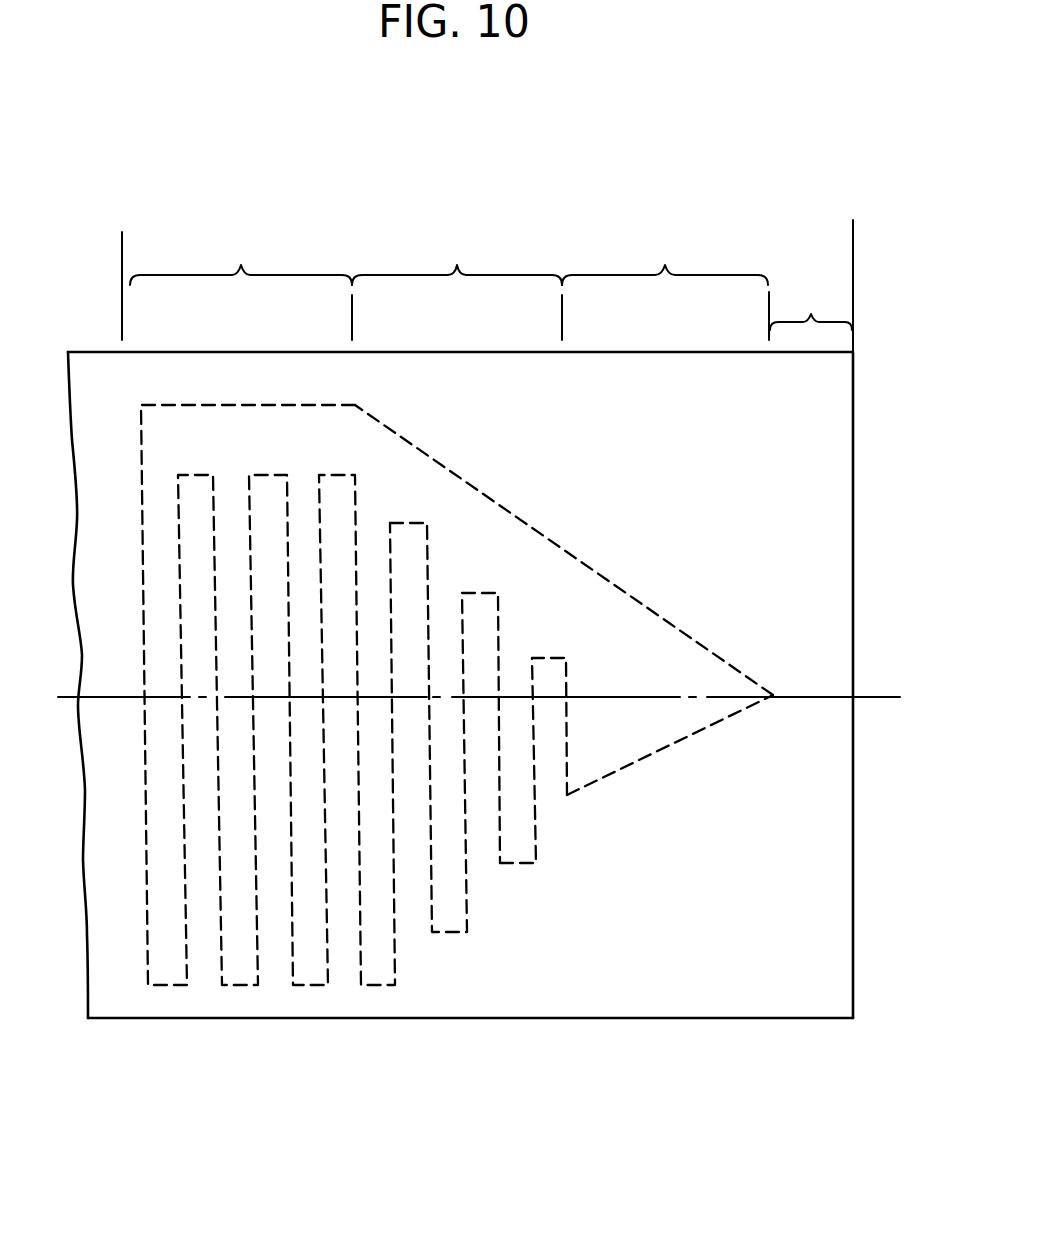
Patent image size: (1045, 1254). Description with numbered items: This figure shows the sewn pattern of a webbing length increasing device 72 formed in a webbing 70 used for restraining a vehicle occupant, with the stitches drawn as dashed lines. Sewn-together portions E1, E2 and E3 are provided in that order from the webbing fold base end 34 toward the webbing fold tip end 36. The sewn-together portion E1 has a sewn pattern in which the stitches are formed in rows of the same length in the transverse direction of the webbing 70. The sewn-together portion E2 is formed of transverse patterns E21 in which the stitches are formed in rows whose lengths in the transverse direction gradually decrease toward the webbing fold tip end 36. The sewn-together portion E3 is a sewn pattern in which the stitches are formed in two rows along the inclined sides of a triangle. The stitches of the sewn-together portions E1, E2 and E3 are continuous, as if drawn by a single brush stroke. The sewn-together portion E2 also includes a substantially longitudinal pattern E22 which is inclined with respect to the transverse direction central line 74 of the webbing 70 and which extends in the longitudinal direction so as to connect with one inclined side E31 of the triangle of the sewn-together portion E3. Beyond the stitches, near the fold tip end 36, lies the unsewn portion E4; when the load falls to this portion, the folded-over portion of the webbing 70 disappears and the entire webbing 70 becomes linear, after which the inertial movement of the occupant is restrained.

The webbing fold base end 34 is at (122, 232).
The webbing fold tip end 36 is at (855, 280).
The webbing 70 is at (856, 578).
The webbing length increasing device 72 is at (434, 1026).
The transverse direction central line 74 is at (805, 700).
The sewn-together portion E1 is at (262, 604).
The sewn-together portion E2 is at (459, 543).
The sewn-together portion E3 is at (665, 281).
The unsewn portion E4 is at (811, 299).
The transverse patterns E21 is at (498, 618).
The substantially longitudinal pattern E22 is at (452, 477).
The inclined side of the triangle E31 is at (624, 590).